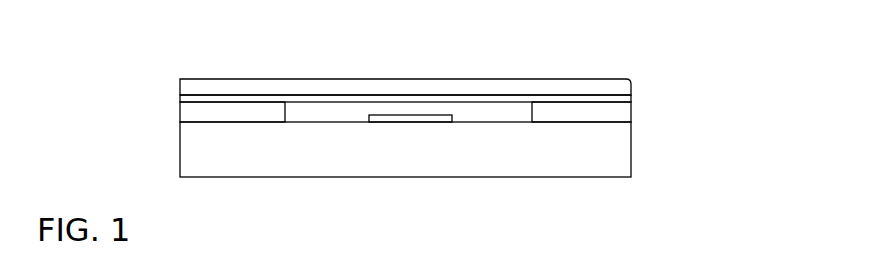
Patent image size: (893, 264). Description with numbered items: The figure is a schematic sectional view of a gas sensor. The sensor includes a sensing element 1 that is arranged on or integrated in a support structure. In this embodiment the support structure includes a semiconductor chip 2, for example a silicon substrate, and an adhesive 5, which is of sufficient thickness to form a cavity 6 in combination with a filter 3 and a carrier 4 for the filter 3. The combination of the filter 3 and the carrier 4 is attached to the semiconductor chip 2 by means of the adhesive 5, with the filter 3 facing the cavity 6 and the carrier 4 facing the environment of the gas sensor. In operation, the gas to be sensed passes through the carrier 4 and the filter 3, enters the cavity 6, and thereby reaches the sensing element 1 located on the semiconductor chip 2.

The sensing element 1 is at (405, 122).
The semiconductor chip 2 is at (210, 159).
The filter 3 is at (506, 97).
The carrier 4 is at (560, 92).
The adhesive 5 is at (576, 118).
The cavity 6 is at (338, 111).